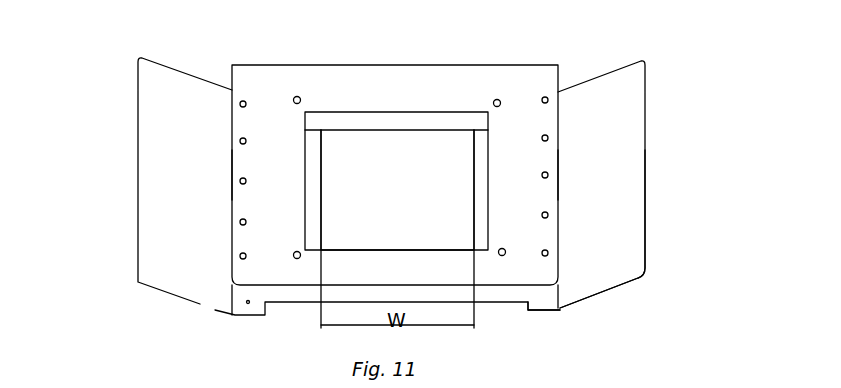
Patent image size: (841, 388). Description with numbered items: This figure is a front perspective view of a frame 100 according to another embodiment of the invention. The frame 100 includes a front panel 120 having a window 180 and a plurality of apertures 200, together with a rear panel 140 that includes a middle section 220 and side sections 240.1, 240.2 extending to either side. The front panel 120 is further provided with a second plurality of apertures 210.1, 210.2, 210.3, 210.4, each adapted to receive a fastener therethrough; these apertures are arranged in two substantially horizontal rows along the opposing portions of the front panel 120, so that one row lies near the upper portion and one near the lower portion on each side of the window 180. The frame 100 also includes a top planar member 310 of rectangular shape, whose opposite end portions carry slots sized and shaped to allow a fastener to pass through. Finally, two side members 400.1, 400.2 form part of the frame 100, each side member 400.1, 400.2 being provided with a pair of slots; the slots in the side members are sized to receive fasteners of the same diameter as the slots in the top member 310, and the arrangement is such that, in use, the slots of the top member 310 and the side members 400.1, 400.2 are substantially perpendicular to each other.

The frame 100 is at (116, 111).
The front panel 120 is at (260, 108).
The rear panel 140 is at (245, 309).
The window 180 is at (436, 167).
The plurality of apertures 200 is at (557, 86).
The aperture of second plurality of apertures 210.1 is at (298, 259).
The aperture of second plurality of apertures 210.2 is at (501, 256).
The aperture of second plurality of apertures 210.3 is at (297, 96).
The aperture of second plurality of apertures 210.4 is at (500, 101).
The middle section 220 is at (499, 309).
The side section 240.1 is at (184, 216).
The side section 240.2 is at (595, 203).
The top planar member 310 is at (362, 122).
The side member 400.1 is at (316, 190).
The side member 400.2 is at (494, 181).